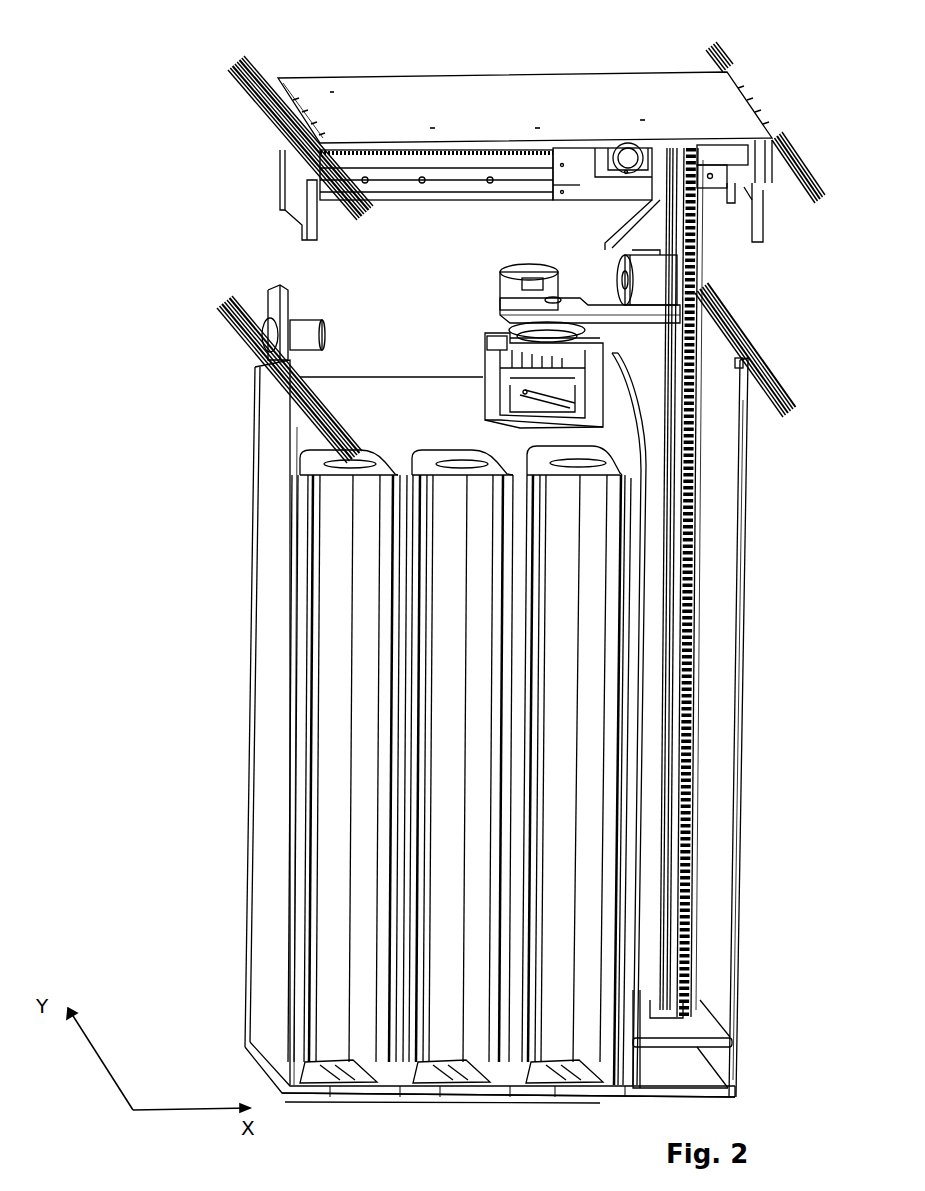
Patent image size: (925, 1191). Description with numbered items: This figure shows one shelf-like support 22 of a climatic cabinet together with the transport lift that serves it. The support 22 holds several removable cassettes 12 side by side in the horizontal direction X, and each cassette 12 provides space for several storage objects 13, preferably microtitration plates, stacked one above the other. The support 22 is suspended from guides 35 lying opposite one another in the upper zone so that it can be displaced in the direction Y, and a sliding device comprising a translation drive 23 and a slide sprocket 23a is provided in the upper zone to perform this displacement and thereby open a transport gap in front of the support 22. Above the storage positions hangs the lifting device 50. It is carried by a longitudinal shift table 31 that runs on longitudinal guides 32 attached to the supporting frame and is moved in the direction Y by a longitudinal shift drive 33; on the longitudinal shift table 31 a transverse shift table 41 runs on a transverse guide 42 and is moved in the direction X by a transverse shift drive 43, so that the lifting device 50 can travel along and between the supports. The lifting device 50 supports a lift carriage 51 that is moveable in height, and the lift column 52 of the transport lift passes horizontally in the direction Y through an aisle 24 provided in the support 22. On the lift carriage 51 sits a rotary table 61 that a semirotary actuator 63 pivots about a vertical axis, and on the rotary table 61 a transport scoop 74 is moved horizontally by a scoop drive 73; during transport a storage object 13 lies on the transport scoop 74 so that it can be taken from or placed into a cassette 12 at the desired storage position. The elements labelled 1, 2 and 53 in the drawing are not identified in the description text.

The liquid handling apparatus 1 is at (758, 697).
The frame / housing 2 is at (810, 173).
The cassette 12 is at (411, 786).
The storage object 13 is at (521, 326).
The support 22 is at (536, 1082).
The translation drive 23 is at (310, 322).
The slide sprocket 23a is at (245, 310).
The aisle 24 is at (719, 953).
The longitudinal shift table 31 is at (525, 82).
The longitudinal guide 32 is at (496, 125).
The longitudinal shift drive 33 is at (749, 133).
The guide 35 is at (500, 373).
The transverse shift table 41 is at (606, 144).
The transverse guide 42 is at (436, 115).
The transverse shift drive 43 is at (639, 106).
The lifting device 50 is at (482, 263).
The lift carriage 51 is at (643, 298).
The lift column 52 is at (660, 558).
The lift motor 53 is at (685, 276).
The rotary table 61 is at (697, 719).
The semirotary actuator 63 is at (492, 301).
The scoop drive 73 is at (510, 379).
The transport scoop 74 is at (502, 401).